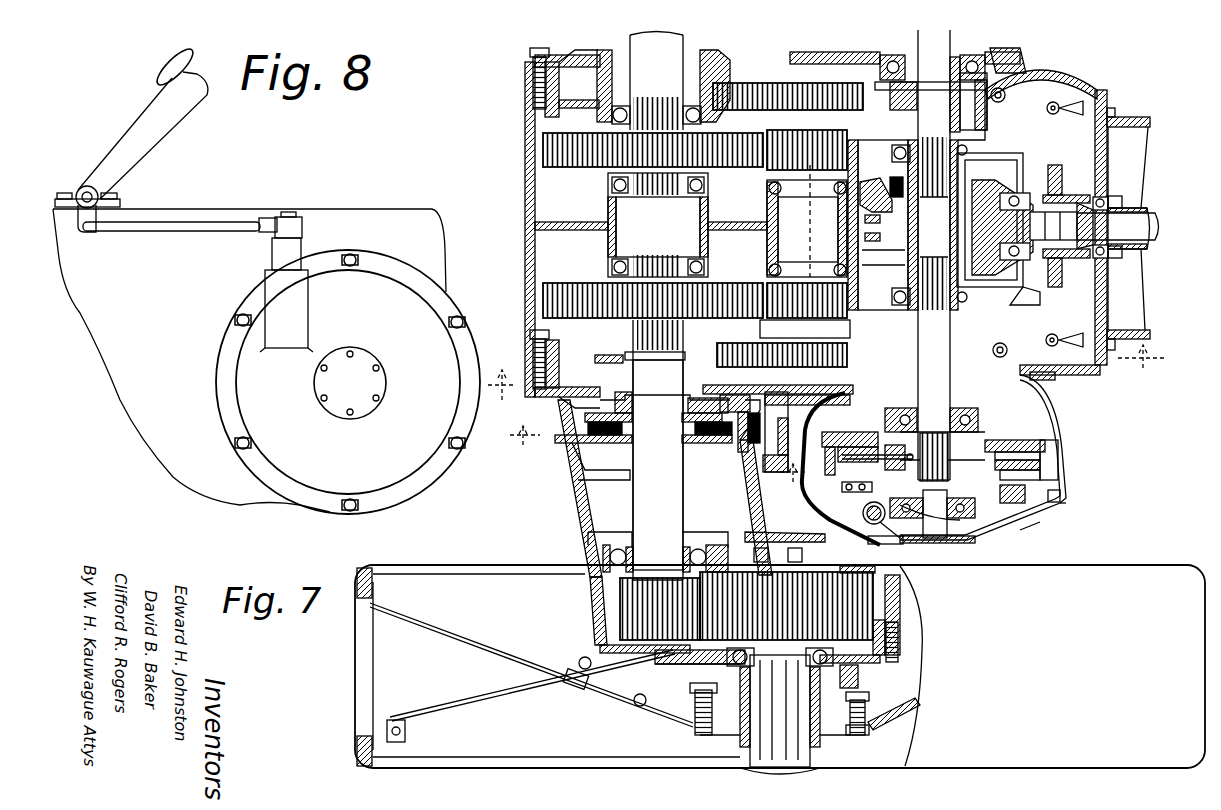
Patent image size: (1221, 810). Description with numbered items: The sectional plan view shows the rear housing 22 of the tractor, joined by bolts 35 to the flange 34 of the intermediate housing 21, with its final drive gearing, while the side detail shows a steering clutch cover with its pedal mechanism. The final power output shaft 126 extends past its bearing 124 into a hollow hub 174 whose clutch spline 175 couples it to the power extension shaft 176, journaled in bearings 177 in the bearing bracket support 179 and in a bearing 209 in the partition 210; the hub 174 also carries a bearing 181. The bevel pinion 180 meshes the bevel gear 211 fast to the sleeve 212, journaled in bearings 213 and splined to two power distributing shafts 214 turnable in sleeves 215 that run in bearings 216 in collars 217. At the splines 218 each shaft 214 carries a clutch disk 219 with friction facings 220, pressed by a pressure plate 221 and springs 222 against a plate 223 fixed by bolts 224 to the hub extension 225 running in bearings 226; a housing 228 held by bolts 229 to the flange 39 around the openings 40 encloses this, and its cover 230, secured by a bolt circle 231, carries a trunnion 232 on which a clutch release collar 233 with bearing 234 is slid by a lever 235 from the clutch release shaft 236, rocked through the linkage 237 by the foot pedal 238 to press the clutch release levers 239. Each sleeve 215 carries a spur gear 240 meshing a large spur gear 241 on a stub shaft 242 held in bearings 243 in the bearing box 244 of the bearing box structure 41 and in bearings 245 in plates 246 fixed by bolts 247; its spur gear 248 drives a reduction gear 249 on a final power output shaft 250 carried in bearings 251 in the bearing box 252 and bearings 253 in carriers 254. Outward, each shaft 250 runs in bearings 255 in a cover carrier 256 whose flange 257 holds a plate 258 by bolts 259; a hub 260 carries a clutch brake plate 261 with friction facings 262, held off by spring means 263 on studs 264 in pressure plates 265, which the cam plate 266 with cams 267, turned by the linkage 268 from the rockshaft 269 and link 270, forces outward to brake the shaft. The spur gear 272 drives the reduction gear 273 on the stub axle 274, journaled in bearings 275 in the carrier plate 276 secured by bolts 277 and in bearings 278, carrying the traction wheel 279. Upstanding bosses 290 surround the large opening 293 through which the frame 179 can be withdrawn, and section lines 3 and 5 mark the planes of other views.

In FIG. 8, the rear housing 22 is at (228, 210).
In FIG. 7, the rear housing 22 is at (525, 215).
In FIG. 8, the foot pedal 238 is at (185, 105).
In FIG. 8, the linkage 237 is at (158, 225).
In FIG. 8, the clutch release shaft 236 is at (287, 212).
In FIG. 7, the clutch release shaft 236 is at (905, 565).
In FIG. 8, the removable cover 230 is at (250, 372).
In FIG. 7, the removable cover 230 is at (1040, 532).
In FIG. 8, the plates 246 is at (135, 422).
In FIG. 7, the plates 246 is at (528, 92).
In FIG. 8, the central trunnion 232 is at (358, 403).
In FIG. 7, the central trunnion 232 is at (975, 545).
In FIG. 8, the bolt circle 231 is at (343, 503).
In FIG. 7, the bolt circle 231 is at (1062, 505).
In FIG. 7, the ring of bolts 247 is at (535, 52).
In FIG. 7, the openings 40 is at (538, 70).
In FIG. 7, the carriers 254 is at (548, 102).
In FIG. 7, the large reduction gears 249 is at (545, 140).
In FIG. 7, the final power output shafts 250 is at (640, 85).
In FIG. 7, the bearings 253 is at (613, 117).
In FIG. 7, the bearings 251 is at (612, 183).
In FIG. 7, the bearing box 252 is at (608, 210).
In FIG. 7, the large spur gears 241 is at (765, 112).
In FIG. 7, the spur gear 248 is at (770, 175).
In FIG. 7, the bearing box structure 41 is at (790, 215).
In FIG. 7, the bearing box 244 is at (770, 240).
In FIG. 7, the stub shafts 242 is at (775, 255).
In FIG. 7, the bearings 243 is at (775, 273).
In FIG. 7, the linkage 268 is at (790, 352).
In FIG. 7, the bearings 245 is at (800, 54).
In FIG. 7, the power distributing shafts 214 is at (952, 50).
In FIG. 7, the sleeves 215 is at (925, 48).
In FIG. 7, the bearings 216 is at (895, 302).
In FIG. 7, the bevel gear 211 is at (907, 212).
In FIG. 7, the sleeve 212 is at (907, 240).
In FIG. 7, the flange 34 is at (1105, 92).
In FIG. 7, the bolt-receiving flange 39 is at (1050, 75).
In FIG. 7, the spur gear 240 is at (1060, 80).
In FIG. 7, the collars 217 is at (1030, 75).
In FIG. 7, the bearings 213 is at (1000, 140).
In FIG. 7, the bearing bracket support 179 is at (975, 150).
In FIG. 7, the large opening 293 is at (1040, 170).
In FIG. 7, the bearing 209 is at (1030, 190).
In FIG. 7, the bearings 177 is at (1055, 195).
In FIG. 7, the bevel pinion 180 is at (1055, 287).
In FIG. 7, the bearing 181 is at (1130, 175).
In FIG. 7, the bearing 124 is at (1140, 190).
In FIG. 7, the power extension shaft 176 is at (1130, 205).
In FIG. 7, the final power output shaft 126 is at (1150, 218).
In FIG. 7, the hollow hub 174 is at (1153, 230).
In FIG. 7, the clutch spline 175 is at (1142, 252).
In FIG. 7, the intermediate housing 21 is at (1140, 125).
In FIG. 7, the bolts 35 is at (1110, 120).
In FIG. 7, the upstanding bosses 290 is at (1145, 312).
In FIG. 7, the partition 210 is at (1035, 300).
In FIG. 7, the bolts 229 is at (1090, 372).
In FIG. 7, the section line 3 is at (826, 379).
In FIG. 7, the hub extension 225 is at (1040, 380).
In FIG. 7, the circle of bolts 224 is at (1058, 398).
In FIG. 7, the clutch disk 219 is at (1050, 445).
In FIG. 7, the friction facings 220 is at (1048, 456).
In FIG. 7, the plate 223 is at (1070, 470).
In FIG. 7, the pressure plate 221 is at (1045, 466).
In FIG. 7, the springs 222 is at (1045, 480).
In FIG. 7, the housing 228 is at (1060, 500).
In FIG. 7, the bearings 226 is at (1035, 512).
In FIG. 7, the splines 218 is at (952, 472).
In FIG. 7, the rockshaft 269 is at (878, 440).
In FIG. 7, the clutch release collar 233 is at (985, 520).
In FIG. 7, the lever 235 is at (920, 545).
In FIG. 7, the clutch release bearing 234 is at (870, 540).
In FIG. 7, the clutch release levers 239 is at (803, 490).
In FIG. 7, the bearings 278 is at (832, 522).
In FIG. 7, the link 270 is at (790, 500).
In FIG. 7, the section line 5 is at (657, 462).
In FIG. 7, the cover carrier 256 is at (585, 520).
In FIG. 7, the bearings 255 is at (603, 555).
In FIG. 7, the flanges 257 is at (580, 440).
In FIG. 7, the plates 258 is at (595, 455).
In FIG. 7, the bolts 259 is at (565, 440).
In FIG. 7, the hubs 260 is at (600, 445).
In FIG. 7, the spring means 263 is at (700, 447).
In FIG. 7, the studs 264 is at (722, 472).
In FIG. 7, the clutch brake plates 261 is at (645, 470).
In FIG. 7, the friction facings 262 is at (660, 525).
In FIG. 7, the pressure plates 265 is at (640, 405).
In FIG. 7, the cam plate 266 is at (650, 355).
In FIG. 7, the cams 267 is at (690, 420).
In FIG. 7, the spur gear 272 is at (620, 610).
In FIG. 7, the reduction gear 273 is at (900, 600).
In FIG. 7, the carrier plate 276 is at (898, 630).
In FIG. 7, the circle of bolts 277 is at (880, 658).
In FIG. 7, the bearings 275 is at (870, 700).
In FIG. 7, the stub axle 274 is at (760, 720).
In FIG. 7, the traction wheel 279 is at (560, 700).